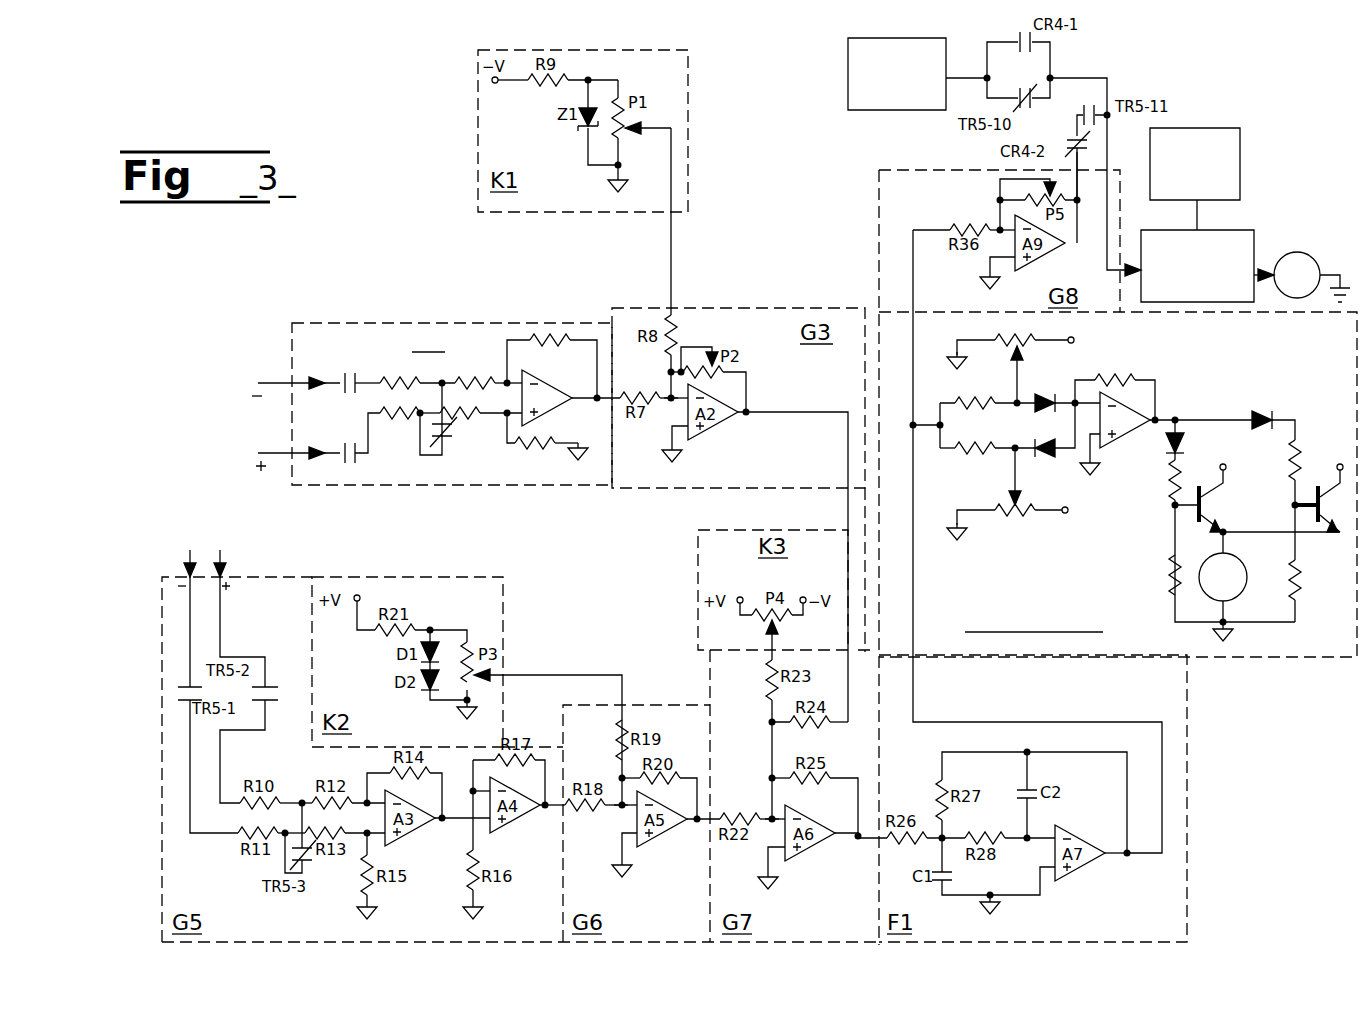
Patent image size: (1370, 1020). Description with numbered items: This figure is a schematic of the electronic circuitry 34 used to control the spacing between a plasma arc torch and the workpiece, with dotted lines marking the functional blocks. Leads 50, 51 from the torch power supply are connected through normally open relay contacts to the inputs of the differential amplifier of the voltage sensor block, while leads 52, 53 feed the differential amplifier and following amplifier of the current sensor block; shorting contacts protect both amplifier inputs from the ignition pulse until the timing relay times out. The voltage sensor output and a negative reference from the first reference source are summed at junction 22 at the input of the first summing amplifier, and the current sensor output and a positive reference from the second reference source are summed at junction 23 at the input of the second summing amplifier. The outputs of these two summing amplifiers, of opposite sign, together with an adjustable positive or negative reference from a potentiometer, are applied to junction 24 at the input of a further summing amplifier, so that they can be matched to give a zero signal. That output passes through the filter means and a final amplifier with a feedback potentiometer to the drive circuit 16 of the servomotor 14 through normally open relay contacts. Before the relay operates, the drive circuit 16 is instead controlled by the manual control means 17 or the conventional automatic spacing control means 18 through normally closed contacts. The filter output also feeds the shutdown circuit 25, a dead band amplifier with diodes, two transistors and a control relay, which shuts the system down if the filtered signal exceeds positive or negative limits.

The servomotor 14 is at (1302, 236).
The drive circuit 16 is at (1232, 238).
The manual control means 17 is at (1236, 142).
The automatic spacing control means 18 is at (905, 89).
The junction 22 is at (669, 395).
The junction 23 is at (620, 812).
The junction 24 is at (769, 815).
The shutdown circuit 25 is at (1000, 595).
The electronic circuitry 34 is at (364, 298).
The lead 50 is at (264, 382).
The lead 51 is at (264, 452).
The lead 52 is at (223, 580).
The lead 53 is at (182, 570).